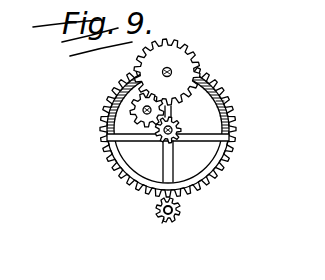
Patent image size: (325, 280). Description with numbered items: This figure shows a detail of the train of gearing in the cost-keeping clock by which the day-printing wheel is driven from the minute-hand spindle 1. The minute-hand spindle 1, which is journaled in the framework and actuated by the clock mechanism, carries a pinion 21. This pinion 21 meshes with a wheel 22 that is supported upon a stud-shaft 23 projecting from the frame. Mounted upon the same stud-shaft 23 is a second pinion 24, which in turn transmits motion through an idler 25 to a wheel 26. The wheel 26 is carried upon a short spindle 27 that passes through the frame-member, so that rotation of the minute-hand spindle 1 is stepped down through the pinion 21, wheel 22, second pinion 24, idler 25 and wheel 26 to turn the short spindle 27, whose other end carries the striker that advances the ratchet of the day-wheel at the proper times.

The minute-hand spindle 1 is at (162, 221).
The pinion 21 is at (181, 212).
The wheel 22 is at (217, 172).
The stud-shaft 23 is at (162, 135).
The second pinion 24 is at (182, 125).
The idler 25 is at (134, 116).
The wheel 26 is at (188, 64).
The short spindle 27 is at (172, 67).